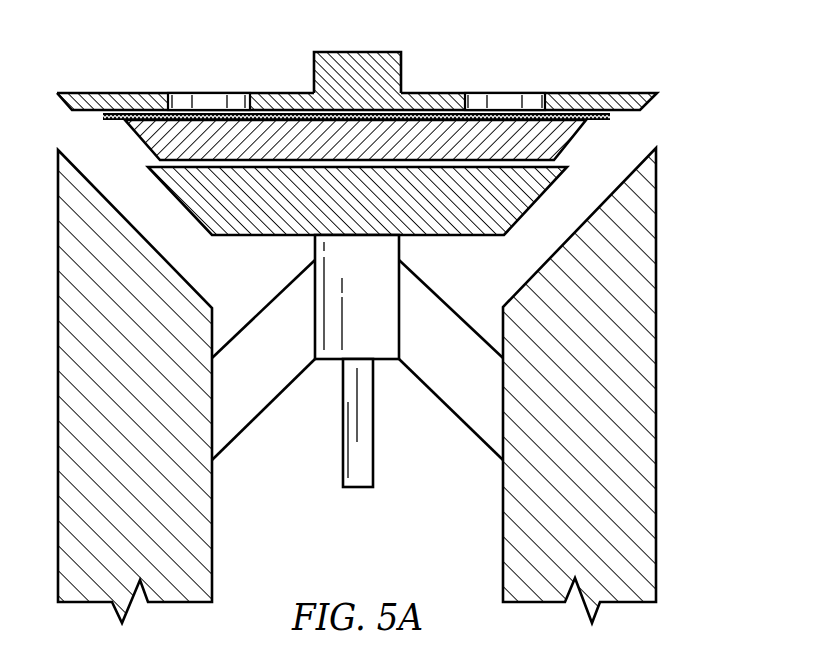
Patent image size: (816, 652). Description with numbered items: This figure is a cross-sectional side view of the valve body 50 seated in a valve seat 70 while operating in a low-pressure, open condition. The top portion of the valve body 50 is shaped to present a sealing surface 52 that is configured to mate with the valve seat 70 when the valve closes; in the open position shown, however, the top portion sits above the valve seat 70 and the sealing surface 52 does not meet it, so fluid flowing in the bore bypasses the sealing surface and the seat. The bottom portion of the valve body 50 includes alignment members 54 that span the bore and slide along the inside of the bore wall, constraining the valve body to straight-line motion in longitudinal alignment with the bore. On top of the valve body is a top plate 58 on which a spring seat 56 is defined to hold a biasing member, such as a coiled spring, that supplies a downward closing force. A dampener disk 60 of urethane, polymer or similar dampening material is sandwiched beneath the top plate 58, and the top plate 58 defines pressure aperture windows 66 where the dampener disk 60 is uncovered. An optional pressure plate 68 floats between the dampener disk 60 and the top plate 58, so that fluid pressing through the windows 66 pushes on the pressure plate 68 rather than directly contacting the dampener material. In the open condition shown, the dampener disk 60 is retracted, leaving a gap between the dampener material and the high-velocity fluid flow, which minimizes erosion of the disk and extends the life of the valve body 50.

The valve body 50 is at (371, 318).
The sealing surface 52 is at (174, 197).
The alignment members 54 is at (235, 440).
The spring seat 56 is at (432, 51).
The top plate 58 is at (352, 61).
The dampener disk 60 is at (568, 150).
The pressure aperture windows 66 is at (204, 91).
The pressure plate 68 is at (503, 108).
The valve seat 70 is at (503, 507).